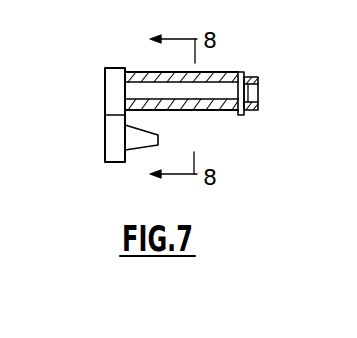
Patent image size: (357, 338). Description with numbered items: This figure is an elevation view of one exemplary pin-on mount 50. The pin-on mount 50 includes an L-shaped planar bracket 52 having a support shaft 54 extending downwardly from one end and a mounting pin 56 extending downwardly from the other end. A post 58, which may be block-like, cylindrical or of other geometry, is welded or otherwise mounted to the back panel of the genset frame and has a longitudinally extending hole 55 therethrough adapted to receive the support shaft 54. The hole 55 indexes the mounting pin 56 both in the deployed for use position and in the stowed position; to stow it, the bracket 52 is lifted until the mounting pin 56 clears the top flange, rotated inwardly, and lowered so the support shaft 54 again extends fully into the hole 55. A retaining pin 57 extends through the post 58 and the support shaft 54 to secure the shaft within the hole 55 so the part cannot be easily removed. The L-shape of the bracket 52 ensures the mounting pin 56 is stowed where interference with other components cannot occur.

The pin-on mount 50 is at (232, 49).
The L-shaped planar bracket 52 is at (104, 90).
The support shaft 54 is at (207, 109).
The hole 55 is at (256, 90).
The mounting pin 56 is at (137, 152).
The pin 57 is at (244, 116).
The post 58 is at (245, 76).